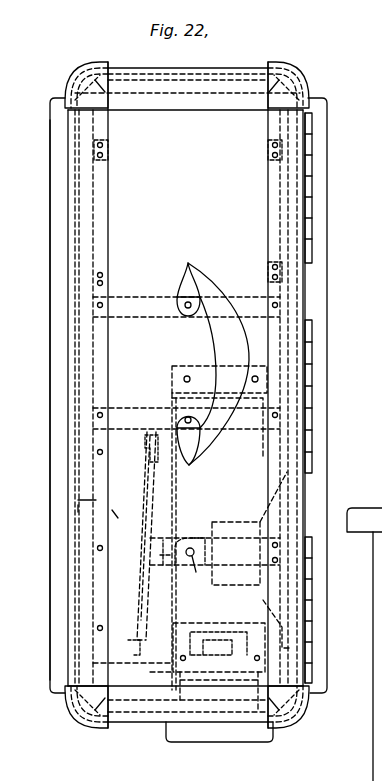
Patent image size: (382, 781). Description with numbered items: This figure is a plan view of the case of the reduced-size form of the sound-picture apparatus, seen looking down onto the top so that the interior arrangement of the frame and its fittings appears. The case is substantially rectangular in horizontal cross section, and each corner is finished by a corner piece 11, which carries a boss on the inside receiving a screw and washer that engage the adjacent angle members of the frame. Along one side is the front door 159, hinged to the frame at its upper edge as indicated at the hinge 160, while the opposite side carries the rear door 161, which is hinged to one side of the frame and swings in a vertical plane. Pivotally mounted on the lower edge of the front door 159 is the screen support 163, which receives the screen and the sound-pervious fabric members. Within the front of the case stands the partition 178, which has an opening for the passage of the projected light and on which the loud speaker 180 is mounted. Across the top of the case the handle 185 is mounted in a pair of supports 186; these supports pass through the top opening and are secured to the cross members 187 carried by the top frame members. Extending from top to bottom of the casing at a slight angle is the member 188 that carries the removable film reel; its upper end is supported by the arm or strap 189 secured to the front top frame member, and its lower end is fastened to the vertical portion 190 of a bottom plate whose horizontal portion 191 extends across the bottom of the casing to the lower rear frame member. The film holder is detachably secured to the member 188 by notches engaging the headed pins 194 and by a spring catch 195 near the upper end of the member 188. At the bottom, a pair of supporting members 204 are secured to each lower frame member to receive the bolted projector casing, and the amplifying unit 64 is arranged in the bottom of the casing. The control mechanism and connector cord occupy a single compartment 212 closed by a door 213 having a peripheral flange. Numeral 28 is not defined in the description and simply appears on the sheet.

The corner piece 11 is at (73, 70).
The partition 178 is at (295, 176).
The supporting members 204 is at (110, 152).
The front door 159 is at (327, 180).
The hinge 160 is at (310, 214).
The cross members 187 is at (144, 297).
The handle 185 is at (218, 337).
The supports 186 is at (180, 312).
The amplifying unit 64 is at (172, 376).
The rear door 161 is at (50, 386).
The headed pins 194 is at (145, 453).
The vertical portion 190 is at (147, 505).
The horizontal portion 191 is at (110, 505).
The loud speaker 180 is at (212, 520).
The arm or strap 189 is at (206, 536).
The member 188 is at (167, 560).
The spring catch 195 is at (220, 582).
The compartment 212 is at (180, 681).
The door 213 is at (178, 743).
The screen support 163 is at (373, 758).
The base 28 is at (176, 778).